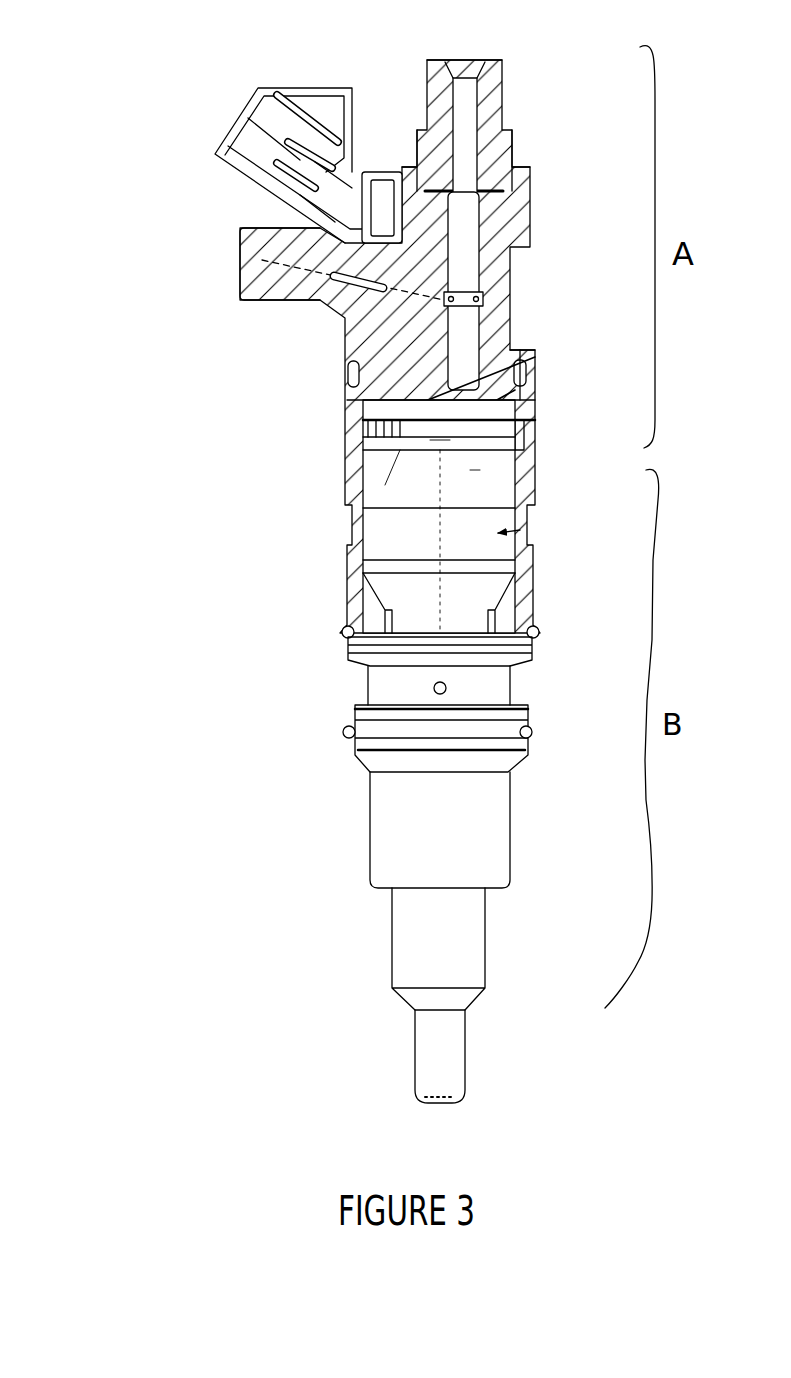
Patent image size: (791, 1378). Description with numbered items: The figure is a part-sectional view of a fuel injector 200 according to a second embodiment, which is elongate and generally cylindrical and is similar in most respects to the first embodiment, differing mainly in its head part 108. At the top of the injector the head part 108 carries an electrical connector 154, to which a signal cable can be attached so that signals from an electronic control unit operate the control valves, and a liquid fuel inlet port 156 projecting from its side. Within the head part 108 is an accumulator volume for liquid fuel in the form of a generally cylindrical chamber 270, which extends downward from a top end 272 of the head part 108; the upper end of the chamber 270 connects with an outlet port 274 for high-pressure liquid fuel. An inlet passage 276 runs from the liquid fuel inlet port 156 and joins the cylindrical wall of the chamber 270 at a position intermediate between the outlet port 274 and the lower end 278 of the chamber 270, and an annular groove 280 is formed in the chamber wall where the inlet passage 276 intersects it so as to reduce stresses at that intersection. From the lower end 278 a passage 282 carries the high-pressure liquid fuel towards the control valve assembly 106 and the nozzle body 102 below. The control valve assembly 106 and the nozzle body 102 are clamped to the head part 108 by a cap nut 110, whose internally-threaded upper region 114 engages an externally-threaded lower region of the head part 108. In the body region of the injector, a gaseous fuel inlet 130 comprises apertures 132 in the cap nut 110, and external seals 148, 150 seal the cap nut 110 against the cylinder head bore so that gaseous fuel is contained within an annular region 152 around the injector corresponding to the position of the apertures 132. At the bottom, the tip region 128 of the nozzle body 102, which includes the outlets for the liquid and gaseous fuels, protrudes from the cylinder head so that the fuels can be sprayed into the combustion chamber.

The fuel injector 200 is at (138, 150).
The electrical connector 154 is at (258, 135).
The liquid fuel inlet port 156 is at (256, 258).
The inlet passage 276 is at (302, 268).
The passage 282 is at (350, 400).
The outlet port 274 is at (488, 70).
The top end 272 is at (524, 170).
The head part 108 is at (531, 262).
The annular groove 280 is at (483, 298).
The chamber 270 is at (472, 342).
The lower end 278 is at (527, 368).
The internally-threaded upper region 114 is at (530, 398).
The control valve assembly 106 is at (534, 527).
The external seal 148 is at (538, 630).
The gaseous fuel inlet 130 is at (343, 682).
The apertures 132 is at (447, 688).
The annular region 152 is at (354, 706).
The external seal 150 is at (531, 736).
The cap nut 110 is at (391, 806).
The nozzle body 102 is at (386, 1007).
The tip region 128 is at (416, 1105).